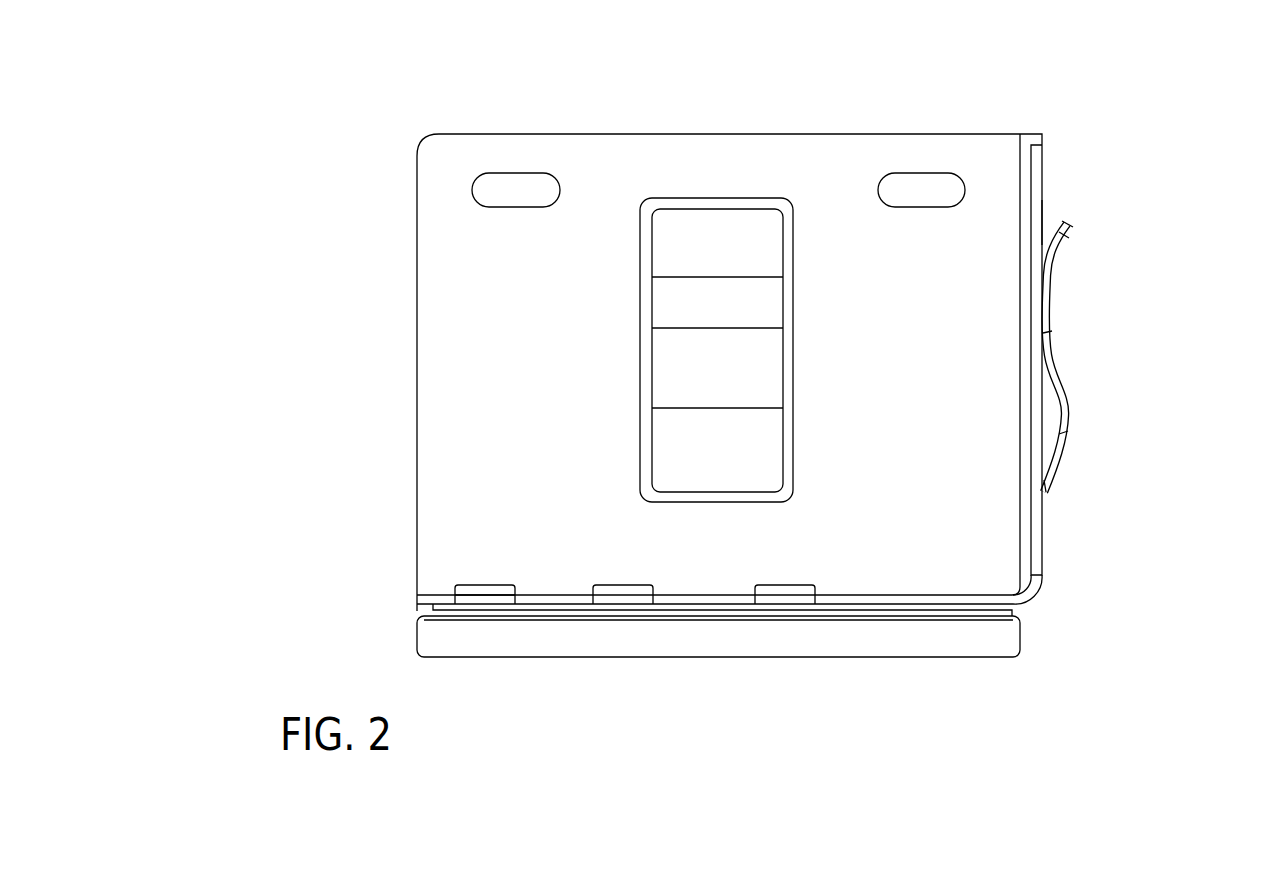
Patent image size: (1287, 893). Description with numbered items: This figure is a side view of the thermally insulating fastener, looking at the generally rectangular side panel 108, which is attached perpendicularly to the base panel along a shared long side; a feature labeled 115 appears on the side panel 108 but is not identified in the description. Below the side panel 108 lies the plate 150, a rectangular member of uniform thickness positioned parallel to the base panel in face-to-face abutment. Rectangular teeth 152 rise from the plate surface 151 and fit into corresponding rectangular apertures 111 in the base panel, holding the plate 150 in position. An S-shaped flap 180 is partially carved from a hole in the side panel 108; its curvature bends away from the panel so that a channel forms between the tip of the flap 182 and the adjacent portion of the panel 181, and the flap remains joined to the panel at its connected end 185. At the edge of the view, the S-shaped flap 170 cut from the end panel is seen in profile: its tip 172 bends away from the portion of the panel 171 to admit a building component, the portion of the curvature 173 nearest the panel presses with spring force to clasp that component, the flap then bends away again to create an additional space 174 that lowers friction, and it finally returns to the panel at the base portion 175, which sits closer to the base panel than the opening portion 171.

The side panel 108 is at (560, 283).
The slot 115 is at (500, 172).
The tip of the flap 182 is at (700, 196).
The portion of the panel 181 is at (740, 196).
The S-shaped flap 180 is at (700, 395).
The connected end of the flap 185 is at (700, 488).
The rectangular teeth 152 is at (487, 592).
The rectangular apertures 111 is at (488, 605).
The plate 150 is at (645, 635).
The plate surface 151 is at (725, 622).
The S-shaped flap 170 is at (1050, 370).
The portion of the panel 171 is at (1049, 218).
The tip of the flap 172 is at (1070, 232).
The portion of the curvature 173 is at (1052, 315).
The additional space 174 is at (1064, 430).
The base portion of the flap 175 is at (1047, 493).